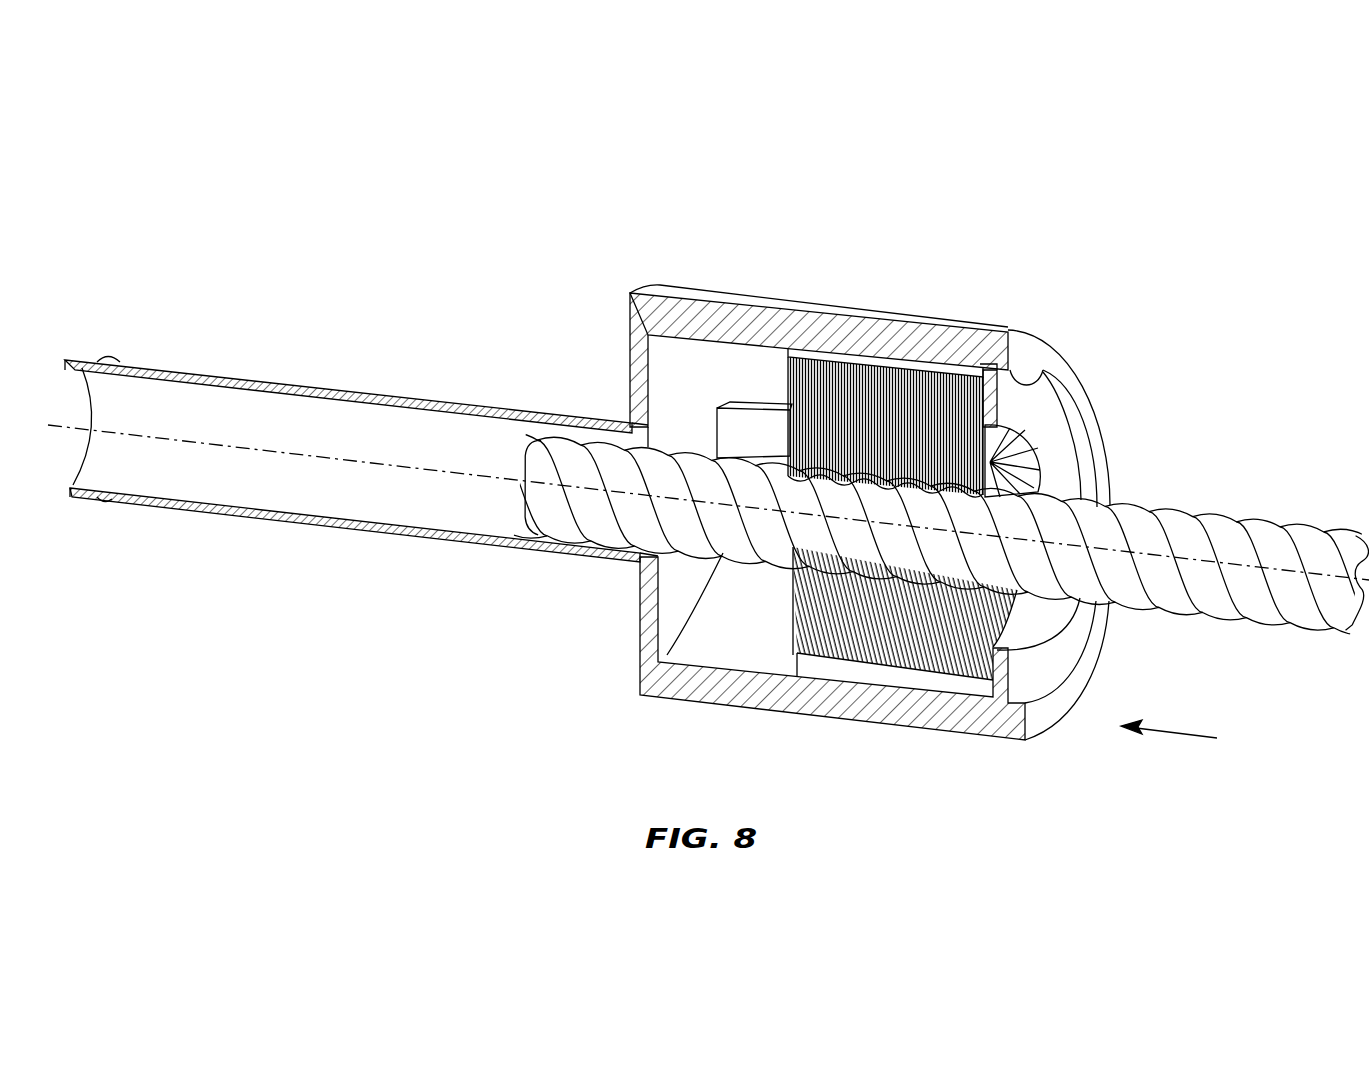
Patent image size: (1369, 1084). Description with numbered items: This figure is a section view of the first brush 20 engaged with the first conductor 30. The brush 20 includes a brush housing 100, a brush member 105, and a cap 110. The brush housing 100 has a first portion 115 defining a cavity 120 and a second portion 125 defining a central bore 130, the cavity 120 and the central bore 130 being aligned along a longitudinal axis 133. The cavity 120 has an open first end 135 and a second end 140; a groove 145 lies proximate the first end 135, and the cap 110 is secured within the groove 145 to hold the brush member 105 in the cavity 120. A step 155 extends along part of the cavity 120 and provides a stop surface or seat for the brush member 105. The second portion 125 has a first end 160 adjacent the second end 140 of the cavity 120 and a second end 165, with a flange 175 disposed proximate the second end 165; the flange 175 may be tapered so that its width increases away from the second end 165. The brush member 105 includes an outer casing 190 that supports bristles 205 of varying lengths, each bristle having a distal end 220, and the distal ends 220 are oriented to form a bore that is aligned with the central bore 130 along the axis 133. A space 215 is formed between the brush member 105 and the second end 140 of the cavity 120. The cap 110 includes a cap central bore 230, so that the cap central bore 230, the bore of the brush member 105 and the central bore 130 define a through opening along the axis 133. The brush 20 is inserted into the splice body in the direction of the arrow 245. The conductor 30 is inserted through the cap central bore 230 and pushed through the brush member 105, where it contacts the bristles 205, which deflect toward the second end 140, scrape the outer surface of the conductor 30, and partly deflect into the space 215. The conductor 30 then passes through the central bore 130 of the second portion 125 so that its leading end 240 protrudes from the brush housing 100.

The first brush 20 is at (983, 212).
The first conductor 30 is at (1300, 533).
The brush housing 100 is at (669, 256).
The brush member 105 is at (950, 390).
The cap 110 is at (1062, 470).
The first portion 115 is at (827, 307).
The cavity 120 is at (870, 477).
The second portion 125 is at (334, 425).
The central bore 130 is at (260, 492).
The longitudinal axis 133 is at (1207, 562).
The first end 135 is at (1025, 378).
The second end 140 is at (760, 440).
The groove 145 is at (993, 340).
The step 155 is at (742, 445).
The first end 160 is at (633, 423).
The second end 165 is at (68, 358).
The flange 175 is at (110, 356).
The outer casing 190 is at (868, 358).
The bristles 205 is at (885, 363).
The space 215 is at (693, 588).
The distal end 220 is at (1017, 590).
The cap central bore 230 is at (1007, 453).
The leading end 240 is at (528, 512).
The arrow 245 is at (1175, 733).